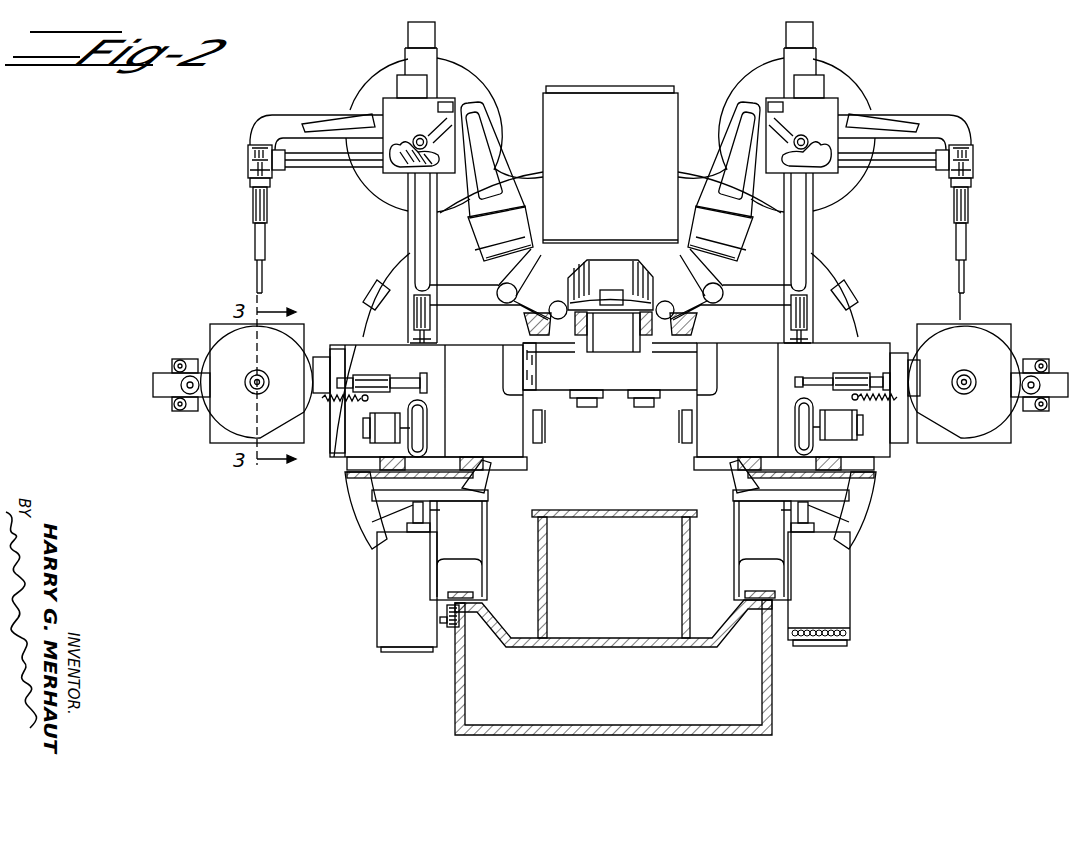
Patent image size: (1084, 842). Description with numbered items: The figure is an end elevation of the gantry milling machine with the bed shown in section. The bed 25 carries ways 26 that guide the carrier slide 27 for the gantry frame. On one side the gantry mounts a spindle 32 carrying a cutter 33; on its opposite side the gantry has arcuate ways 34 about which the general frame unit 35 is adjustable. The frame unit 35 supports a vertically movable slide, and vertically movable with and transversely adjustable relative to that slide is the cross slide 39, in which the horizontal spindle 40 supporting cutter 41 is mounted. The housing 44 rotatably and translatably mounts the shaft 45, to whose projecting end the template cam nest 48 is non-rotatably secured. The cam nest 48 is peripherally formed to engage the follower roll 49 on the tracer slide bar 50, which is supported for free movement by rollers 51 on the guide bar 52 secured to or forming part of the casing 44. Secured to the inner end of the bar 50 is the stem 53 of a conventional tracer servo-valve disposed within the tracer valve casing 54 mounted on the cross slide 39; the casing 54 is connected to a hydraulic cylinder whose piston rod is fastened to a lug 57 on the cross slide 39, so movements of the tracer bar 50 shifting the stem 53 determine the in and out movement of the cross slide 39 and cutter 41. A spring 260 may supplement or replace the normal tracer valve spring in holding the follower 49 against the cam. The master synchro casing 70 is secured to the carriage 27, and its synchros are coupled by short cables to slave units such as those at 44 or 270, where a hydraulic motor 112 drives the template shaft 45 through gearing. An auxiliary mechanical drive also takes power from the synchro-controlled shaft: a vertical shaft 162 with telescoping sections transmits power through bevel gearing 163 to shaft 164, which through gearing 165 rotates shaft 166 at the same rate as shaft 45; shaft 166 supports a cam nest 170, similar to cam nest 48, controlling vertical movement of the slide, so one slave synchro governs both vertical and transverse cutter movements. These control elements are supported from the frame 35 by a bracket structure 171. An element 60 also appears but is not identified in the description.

The bed 25 is at (456, 684).
The ways 26 is at (478, 594).
The carrier slide 27 is at (476, 556).
The spindle 32 is at (578, 399).
The cutter 33 is at (588, 408).
The arcuate ways 34 is at (492, 483).
The general frame unit 35 is at (470, 273).
The cross slide 39 is at (494, 408).
The horizontal spindle 40 is at (530, 452).
The cutter 41 is at (548, 426).
The housing 44 is at (222, 440).
The shaft 45 is at (259, 380).
The template cam nest 48 is at (238, 419).
The follower roll 49 is at (186, 360).
The tracer slide bar 50 is at (343, 352).
The rollers 51 is at (175, 408).
The guide bar 52 is at (196, 408).
The stem 53 is at (352, 352).
The tracer valve casing 54 is at (386, 376).
The lug 57 is at (800, 376).
The column 60 is at (410, 243).
The master synchro casing 70 is at (380, 610).
The hydraulic motor 112 is at (424, 426).
The vertical shaft 162 is at (251, 210).
The bevel gearing 163 is at (250, 158).
The shaft 164 is at (290, 168).
The gearing 165 is at (400, 166).
The shaft 166 is at (421, 134).
The cam nest 170 is at (463, 72).
The bracket structure 171 is at (517, 182).
The spring 260 is at (340, 452).
The slave synchro unit 270 is at (838, 100).